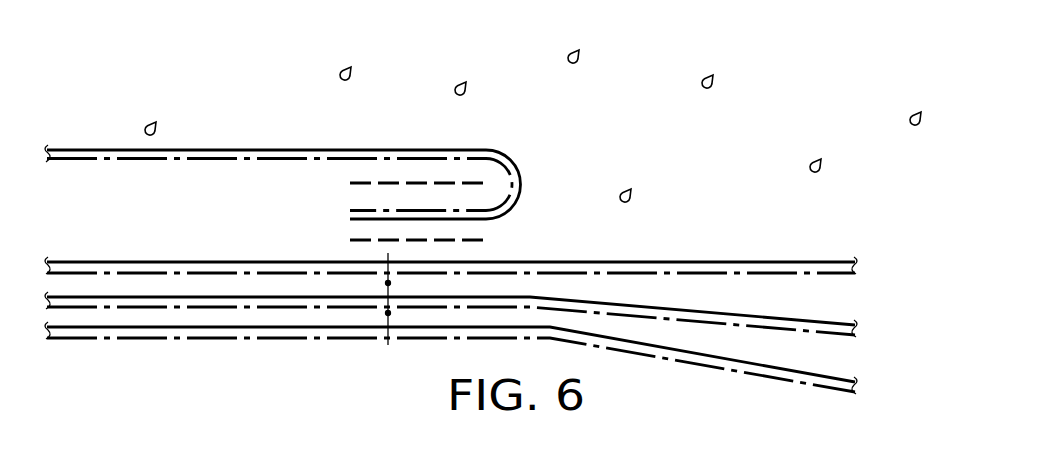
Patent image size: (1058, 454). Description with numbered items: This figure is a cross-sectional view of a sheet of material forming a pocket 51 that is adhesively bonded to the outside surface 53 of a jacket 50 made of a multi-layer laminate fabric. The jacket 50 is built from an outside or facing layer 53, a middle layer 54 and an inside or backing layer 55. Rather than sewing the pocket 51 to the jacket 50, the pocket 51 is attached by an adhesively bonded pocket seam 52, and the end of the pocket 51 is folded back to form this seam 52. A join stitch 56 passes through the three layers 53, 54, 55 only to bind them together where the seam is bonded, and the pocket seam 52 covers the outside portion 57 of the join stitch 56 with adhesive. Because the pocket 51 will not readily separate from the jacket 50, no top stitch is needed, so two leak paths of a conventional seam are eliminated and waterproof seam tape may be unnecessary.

The jacket 50 is at (496, 271).
The pocket 51 is at (198, 126).
The pocket seam 52 is at (528, 155).
The outside surface 53 is at (862, 270).
The middle layer 54 is at (862, 330).
The inside layer 55 is at (862, 388).
The join stitch 56 is at (381, 317).
The outside portion 57 is at (381, 253).